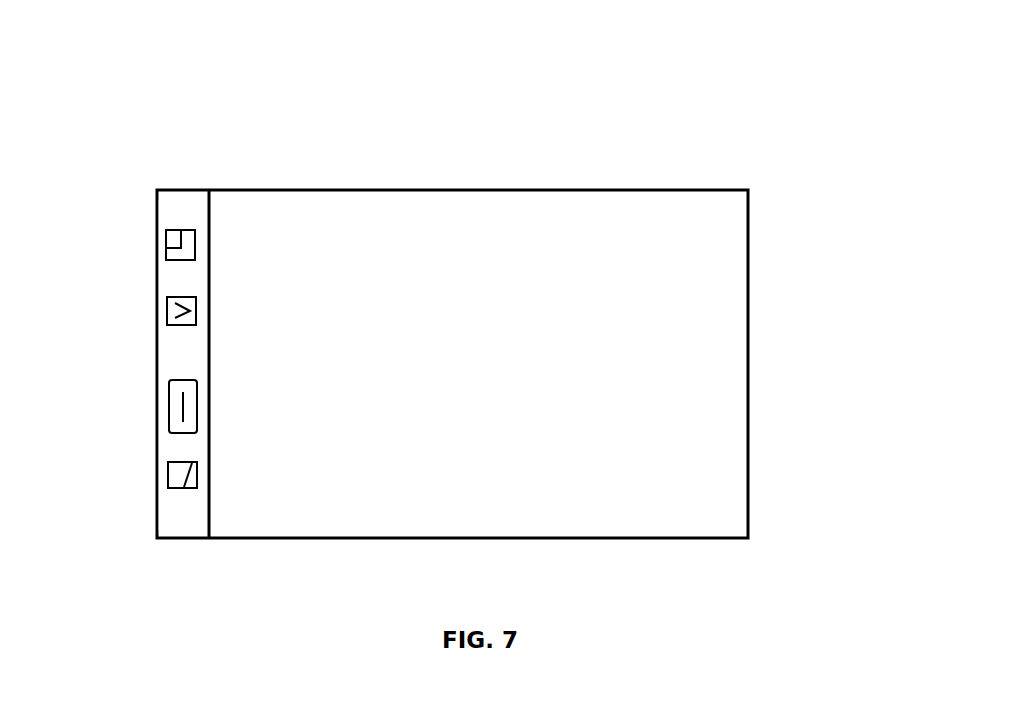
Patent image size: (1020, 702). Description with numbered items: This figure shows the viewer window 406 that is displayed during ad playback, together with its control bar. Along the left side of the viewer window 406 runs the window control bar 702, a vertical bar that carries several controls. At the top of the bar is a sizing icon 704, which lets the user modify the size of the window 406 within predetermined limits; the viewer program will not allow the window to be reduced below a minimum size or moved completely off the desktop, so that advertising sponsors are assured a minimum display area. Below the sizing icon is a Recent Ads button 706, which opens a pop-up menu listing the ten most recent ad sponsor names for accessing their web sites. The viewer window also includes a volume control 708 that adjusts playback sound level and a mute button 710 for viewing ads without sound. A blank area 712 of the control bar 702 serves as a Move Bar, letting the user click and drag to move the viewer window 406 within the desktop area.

The viewer window 406 is at (765, 74).
The window control bar 702 is at (209, 282).
The sizing icon 704 is at (399, 364).
The Recent Ads button 706 is at (165, 308).
The volume control 708 is at (169, 400).
The mute button 710 is at (169, 470).
The blank area 712 is at (168, 352).